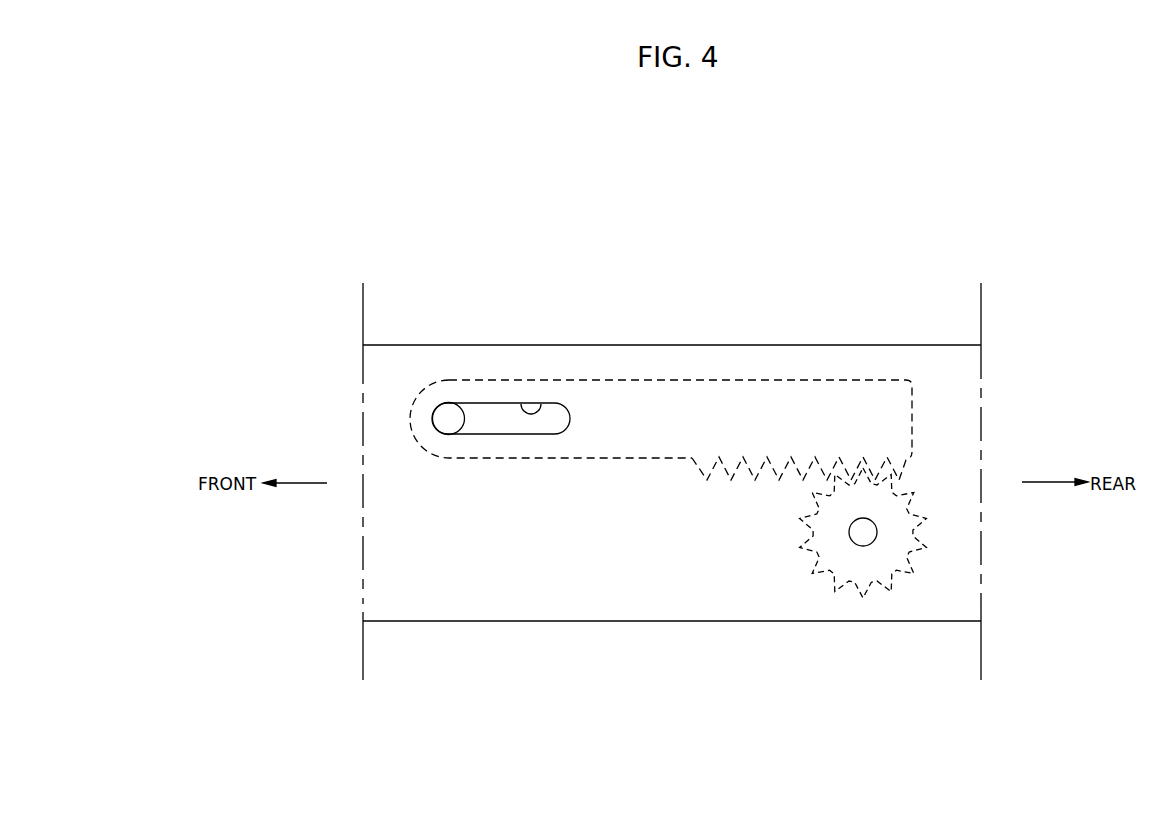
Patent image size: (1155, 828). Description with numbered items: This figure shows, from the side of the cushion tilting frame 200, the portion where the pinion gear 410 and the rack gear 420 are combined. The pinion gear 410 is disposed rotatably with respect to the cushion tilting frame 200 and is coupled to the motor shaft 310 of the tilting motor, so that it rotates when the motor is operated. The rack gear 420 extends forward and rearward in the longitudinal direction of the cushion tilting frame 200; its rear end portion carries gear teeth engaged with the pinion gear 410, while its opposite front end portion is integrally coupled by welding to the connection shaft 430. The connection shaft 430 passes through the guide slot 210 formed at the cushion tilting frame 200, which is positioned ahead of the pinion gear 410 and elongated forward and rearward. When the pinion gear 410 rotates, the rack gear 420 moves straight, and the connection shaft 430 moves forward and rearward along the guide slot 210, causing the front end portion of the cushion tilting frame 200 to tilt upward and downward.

The cushion tilting frame 200 is at (841, 345).
The guide slot 210 is at (540, 407).
The motor shaft 310 is at (863, 535).
The pinion gear 410 is at (828, 552).
The rack gear 420 is at (689, 413).
The connection shaft 430 is at (447, 417).